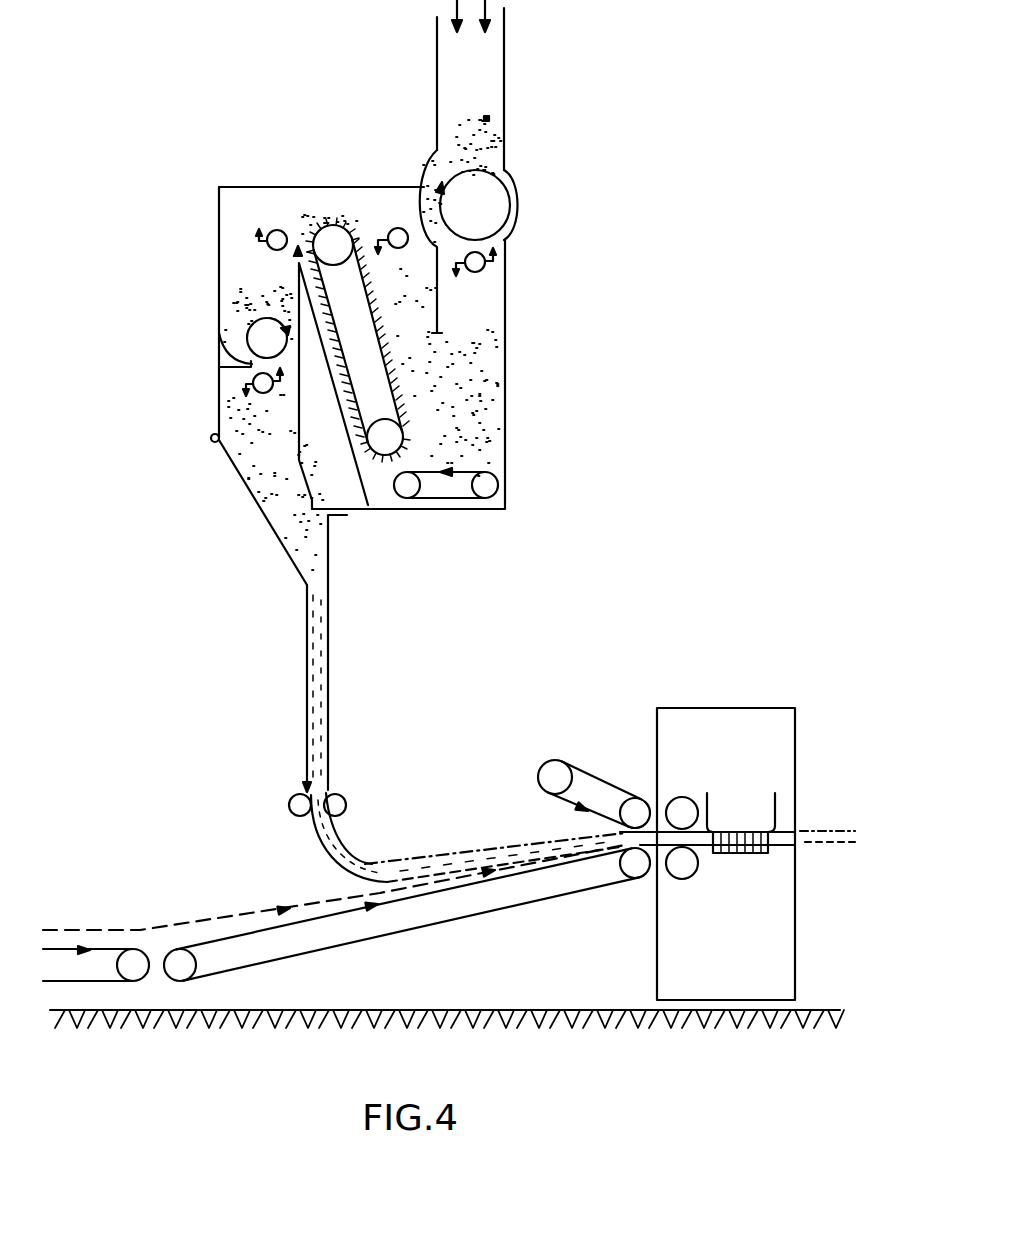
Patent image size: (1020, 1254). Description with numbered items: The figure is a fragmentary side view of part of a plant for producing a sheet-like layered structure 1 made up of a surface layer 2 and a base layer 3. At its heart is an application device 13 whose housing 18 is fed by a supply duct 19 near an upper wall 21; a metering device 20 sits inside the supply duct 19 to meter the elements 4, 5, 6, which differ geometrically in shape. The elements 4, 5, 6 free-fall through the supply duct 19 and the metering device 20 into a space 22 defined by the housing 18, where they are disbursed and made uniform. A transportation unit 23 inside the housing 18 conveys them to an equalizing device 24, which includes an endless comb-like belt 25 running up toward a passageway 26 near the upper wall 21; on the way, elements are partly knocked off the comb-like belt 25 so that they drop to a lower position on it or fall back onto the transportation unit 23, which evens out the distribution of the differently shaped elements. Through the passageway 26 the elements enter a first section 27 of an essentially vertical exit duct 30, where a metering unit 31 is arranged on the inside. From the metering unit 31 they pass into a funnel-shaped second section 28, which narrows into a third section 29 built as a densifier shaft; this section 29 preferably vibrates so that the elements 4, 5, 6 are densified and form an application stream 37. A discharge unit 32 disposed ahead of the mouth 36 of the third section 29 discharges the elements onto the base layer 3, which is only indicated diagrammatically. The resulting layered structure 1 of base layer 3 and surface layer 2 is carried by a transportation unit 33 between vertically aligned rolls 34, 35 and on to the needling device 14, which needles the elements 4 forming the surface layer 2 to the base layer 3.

The layered structure 1 is at (860, 835).
The surface layer 2 is at (805, 828).
The base layer 3 is at (303, 903).
The element 4 is at (468, 112).
The element 5 is at (490, 118).
The element 6 is at (480, 160).
The application device 13 is at (596, 310).
The needling device 14 is at (735, 708).
The housing 18 is at (505, 352).
The supply duct 19 is at (493, 72).
The metering device 20 is at (493, 210).
The upper wall 21 is at (240, 187).
The space 22 is at (493, 413).
The transportation unit 23 is at (498, 485).
The equalizing device 24 is at (338, 232).
The endless comb-like belt 25 is at (373, 312).
The passageway 26 is at (290, 195).
The first section 27 is at (238, 248).
The second section 28 is at (260, 483).
The third section 29 is at (328, 645).
The exit duct 30 is at (176, 426).
The metering unit 31 is at (255, 342).
The discharge unit 32 is at (297, 800).
The transportation unit 33 is at (480, 915).
The roll 34 is at (632, 800).
The roll 35 is at (630, 868).
The mouth 36 is at (330, 777).
The application stream 37 is at (342, 852).